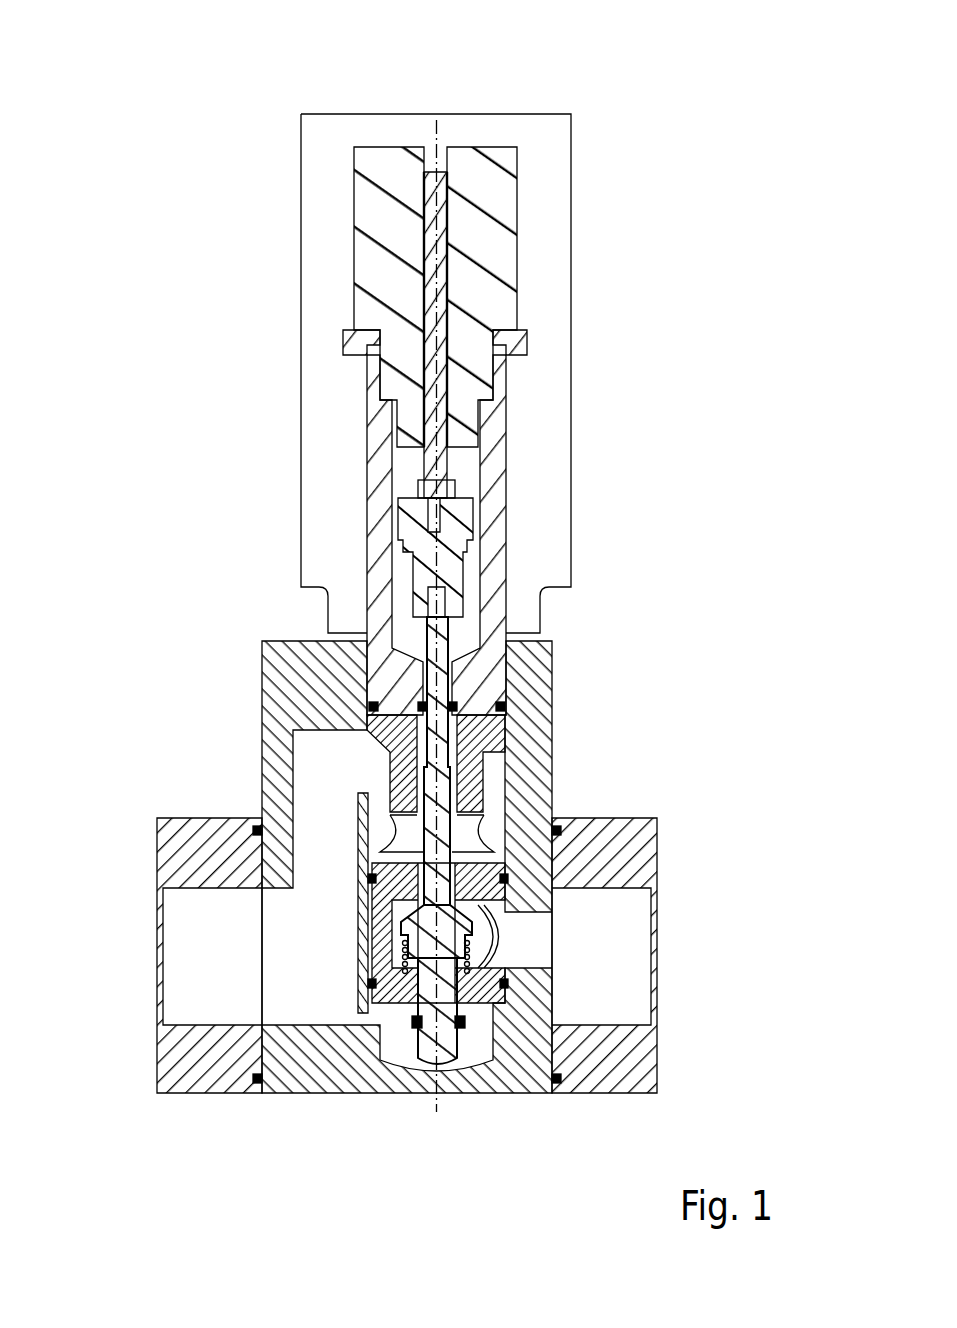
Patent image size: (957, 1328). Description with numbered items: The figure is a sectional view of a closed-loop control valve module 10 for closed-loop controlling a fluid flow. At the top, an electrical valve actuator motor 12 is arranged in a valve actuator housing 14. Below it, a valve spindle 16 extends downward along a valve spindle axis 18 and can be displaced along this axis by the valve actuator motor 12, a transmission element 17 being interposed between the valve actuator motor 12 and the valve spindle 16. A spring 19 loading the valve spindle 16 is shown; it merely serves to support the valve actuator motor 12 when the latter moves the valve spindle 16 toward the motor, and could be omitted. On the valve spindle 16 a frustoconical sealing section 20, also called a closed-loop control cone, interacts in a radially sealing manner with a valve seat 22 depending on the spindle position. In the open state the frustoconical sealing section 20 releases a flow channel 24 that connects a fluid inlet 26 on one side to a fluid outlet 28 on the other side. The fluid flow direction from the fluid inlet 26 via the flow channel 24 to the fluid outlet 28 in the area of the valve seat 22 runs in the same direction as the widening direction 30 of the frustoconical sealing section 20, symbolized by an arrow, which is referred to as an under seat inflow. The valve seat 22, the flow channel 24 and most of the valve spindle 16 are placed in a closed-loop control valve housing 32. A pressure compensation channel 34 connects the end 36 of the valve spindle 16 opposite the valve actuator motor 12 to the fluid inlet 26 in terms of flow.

The closed-loop control valve module 10 is at (615, 107).
The electrical valve actuator motor 12 is at (503, 248).
The valve actuator housing 14 is at (572, 547).
The valve spindle 16 is at (445, 780).
The transmission element 17 is at (465, 515).
The valve spindle axis 18 is at (436, 1103).
The spring 19 is at (470, 955).
The frustoconical sealing section 20 is at (445, 925).
The valve seat 22 is at (480, 915).
The flow channel 24 is at (415, 905).
The fluid inlet 26 is at (175, 998).
The fluid outlet 28 is at (627, 910).
The widening direction 30 is at (758, 930).
The closed-loop control valve housing 32 is at (280, 1078).
The pressure compensation channel 34 is at (380, 1018).
The end of the valve spindle 36 is at (447, 1062).